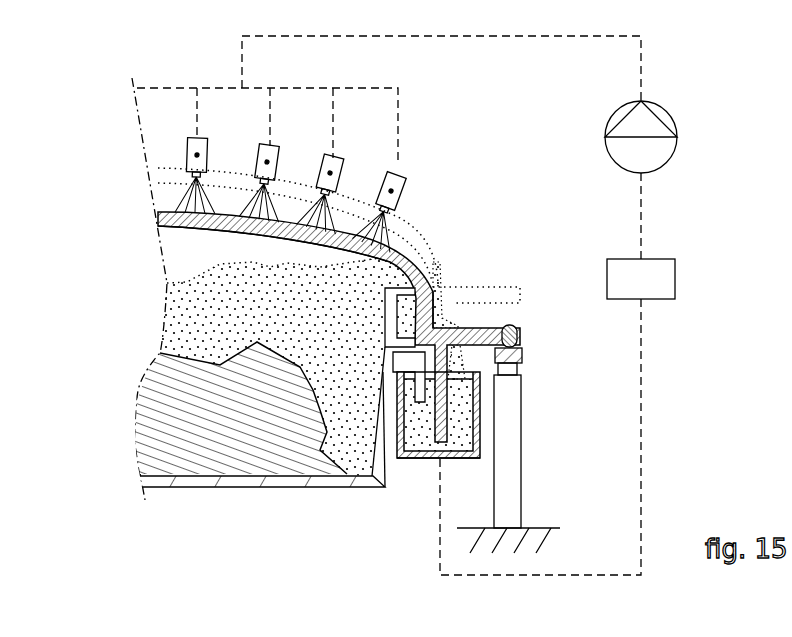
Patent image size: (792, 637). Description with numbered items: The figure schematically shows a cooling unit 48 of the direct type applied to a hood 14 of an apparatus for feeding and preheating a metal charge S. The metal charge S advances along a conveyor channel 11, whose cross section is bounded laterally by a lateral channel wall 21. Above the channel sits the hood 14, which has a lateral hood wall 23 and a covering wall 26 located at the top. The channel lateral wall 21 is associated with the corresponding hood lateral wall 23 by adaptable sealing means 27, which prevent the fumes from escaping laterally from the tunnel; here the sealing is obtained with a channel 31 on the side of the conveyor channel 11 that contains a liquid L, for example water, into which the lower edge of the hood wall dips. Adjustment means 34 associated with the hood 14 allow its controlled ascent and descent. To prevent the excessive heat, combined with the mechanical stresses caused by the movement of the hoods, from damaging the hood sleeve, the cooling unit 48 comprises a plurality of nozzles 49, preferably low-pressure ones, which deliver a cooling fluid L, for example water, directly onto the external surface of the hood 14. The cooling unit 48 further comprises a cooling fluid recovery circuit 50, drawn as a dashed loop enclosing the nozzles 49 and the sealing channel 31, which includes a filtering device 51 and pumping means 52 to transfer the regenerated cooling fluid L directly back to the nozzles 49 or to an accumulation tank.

The conveyor channel 11 is at (279, 490).
The hood 14 is at (403, 253).
The lateral channel wall 21 is at (386, 412).
The lateral hood wall 23 is at (422, 291).
The covering wall 26 is at (192, 225).
The adaptable sealing means 27 is at (420, 480).
The channel 31 is at (473, 415).
The adjustment means 34 is at (534, 437).
The cooling unit 48 is at (419, 118).
The nozzles 49 is at (265, 160).
The cooling fluid recovery circuit 50 is at (654, 430).
The filtering device 51 is at (627, 293).
The pumping means 52 is at (607, 129).
The metal charge S is at (156, 413).
The liquid / cooling fluid L is at (187, 197).